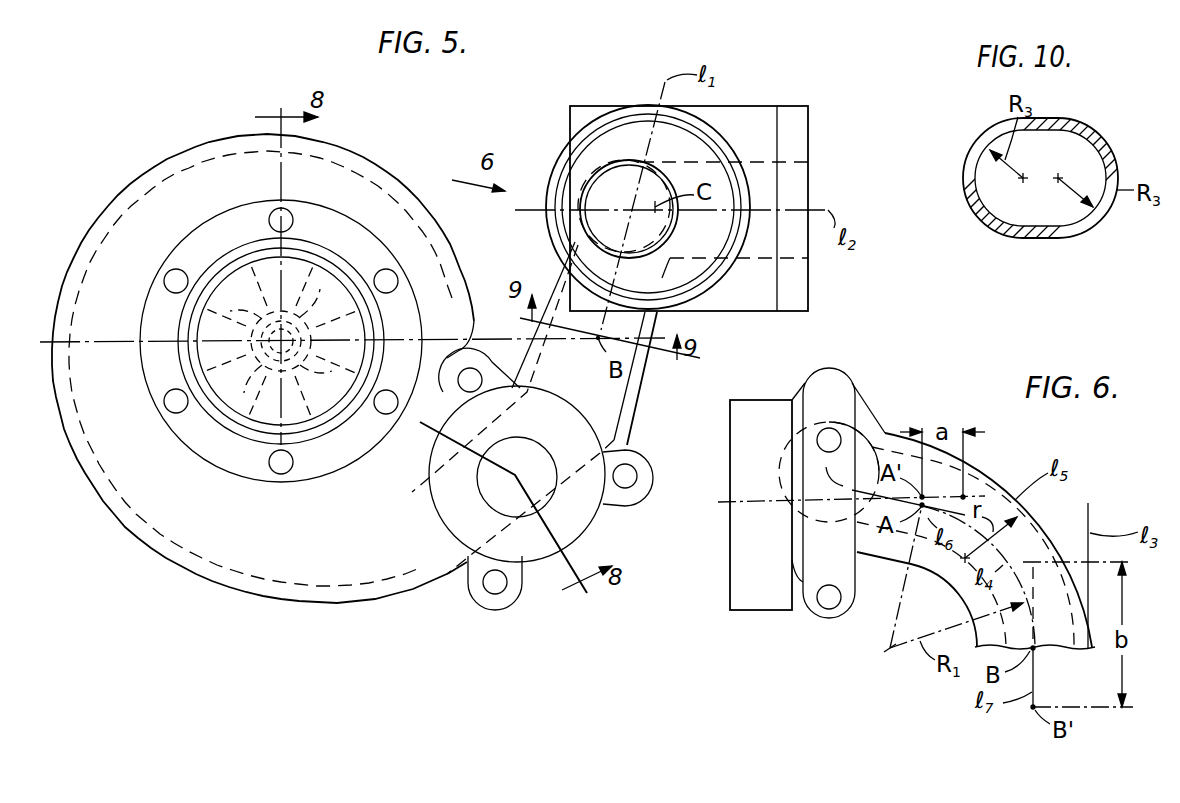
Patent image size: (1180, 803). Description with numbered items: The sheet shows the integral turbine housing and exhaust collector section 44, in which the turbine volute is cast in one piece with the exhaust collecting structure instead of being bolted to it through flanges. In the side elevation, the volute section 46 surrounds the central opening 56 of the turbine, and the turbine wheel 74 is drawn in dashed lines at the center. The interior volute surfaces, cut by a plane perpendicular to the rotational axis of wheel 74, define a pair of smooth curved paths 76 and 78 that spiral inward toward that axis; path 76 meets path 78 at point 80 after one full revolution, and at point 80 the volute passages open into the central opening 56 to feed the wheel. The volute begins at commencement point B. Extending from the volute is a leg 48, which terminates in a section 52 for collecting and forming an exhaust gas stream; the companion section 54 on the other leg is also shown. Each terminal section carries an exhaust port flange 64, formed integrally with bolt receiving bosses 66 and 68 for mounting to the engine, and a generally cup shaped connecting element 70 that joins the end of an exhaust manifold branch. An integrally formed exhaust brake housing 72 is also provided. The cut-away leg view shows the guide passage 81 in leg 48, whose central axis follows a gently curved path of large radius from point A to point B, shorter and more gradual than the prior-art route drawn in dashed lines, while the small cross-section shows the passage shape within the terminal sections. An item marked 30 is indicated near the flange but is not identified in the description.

In FIG. 5, the outlet flange assembly 30 is at (685, 189).
In FIG. 5, the integral turbine housing and exhaust collector section 44 is at (398, 166).
In FIG. 5, the volute section 46 is at (327, 600).
In FIG. 6, the leg 48 is at (1047, 523).
In FIG. 6, the section 52 is at (848, 370).
In FIG. 5, the section 54 is at (752, 98).
In FIG. 5, the central opening 56 is at (198, 352).
In FIG. 5, the exhaust port flange 64 is at (795, 142).
In FIG. 6, the exhaust port flange 64 is at (872, 410).
In FIG. 6, the bolt receiving boss 66 is at (817, 378).
In FIG. 6, the bolt receiving boss 68 is at (832, 622).
In FIG. 5, the cup shaped connecting element 70 is at (637, 110).
In FIG. 6, the cup shaped connecting element 70 is at (752, 412).
In FIG. 5, the exhaust brake housing 72 is at (580, 518).
In FIG. 5, the turbine wheel 74 is at (237, 290).
In FIG. 5, the curved path 76 is at (413, 593).
In FIG. 5, the curved path 78 is at (368, 494).
In FIG. 5, the point 80 is at (253, 452).
In FIG. 6, the guide passage 81 is at (1045, 648).